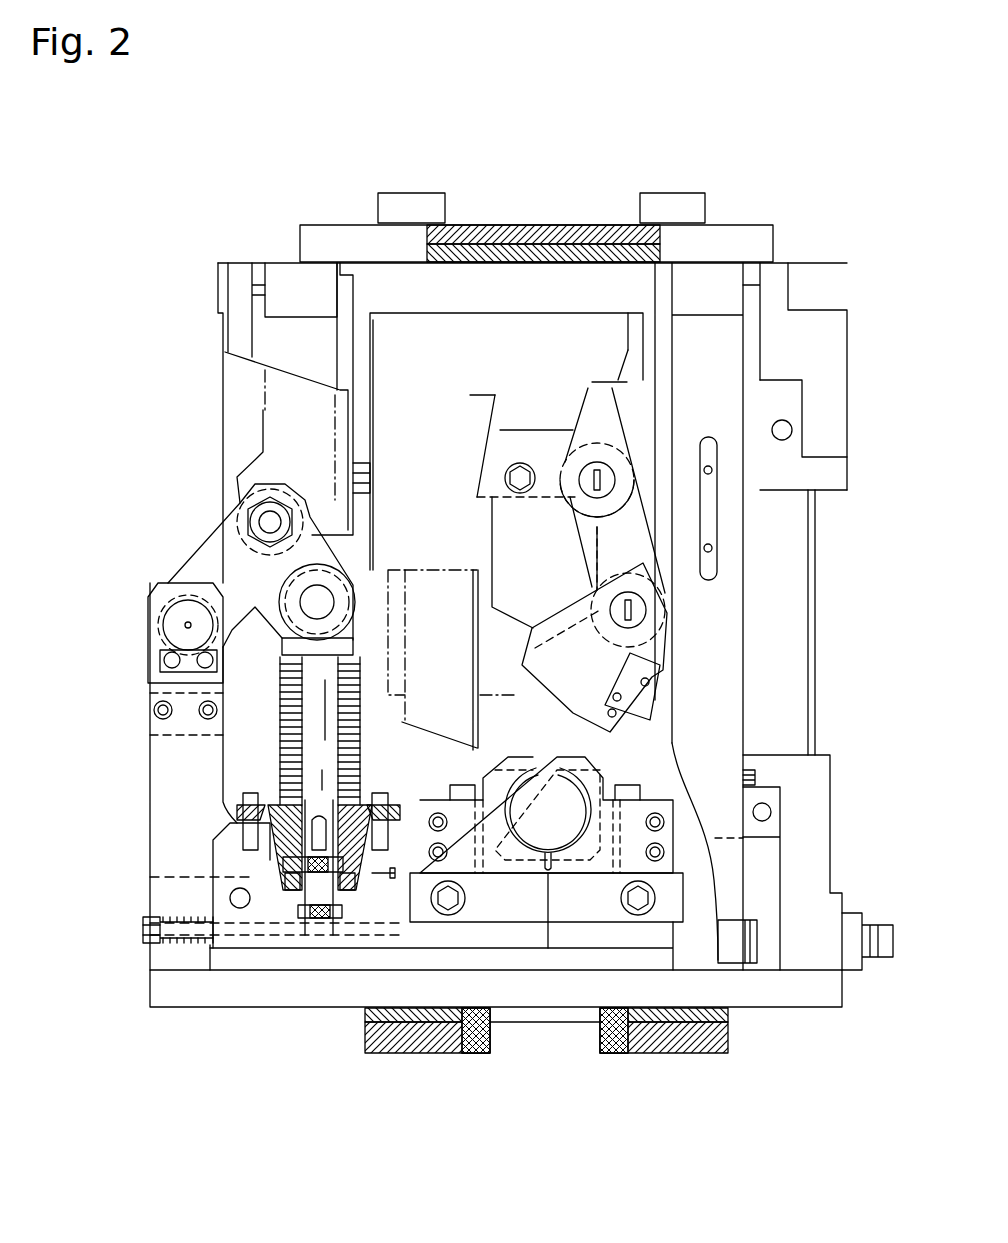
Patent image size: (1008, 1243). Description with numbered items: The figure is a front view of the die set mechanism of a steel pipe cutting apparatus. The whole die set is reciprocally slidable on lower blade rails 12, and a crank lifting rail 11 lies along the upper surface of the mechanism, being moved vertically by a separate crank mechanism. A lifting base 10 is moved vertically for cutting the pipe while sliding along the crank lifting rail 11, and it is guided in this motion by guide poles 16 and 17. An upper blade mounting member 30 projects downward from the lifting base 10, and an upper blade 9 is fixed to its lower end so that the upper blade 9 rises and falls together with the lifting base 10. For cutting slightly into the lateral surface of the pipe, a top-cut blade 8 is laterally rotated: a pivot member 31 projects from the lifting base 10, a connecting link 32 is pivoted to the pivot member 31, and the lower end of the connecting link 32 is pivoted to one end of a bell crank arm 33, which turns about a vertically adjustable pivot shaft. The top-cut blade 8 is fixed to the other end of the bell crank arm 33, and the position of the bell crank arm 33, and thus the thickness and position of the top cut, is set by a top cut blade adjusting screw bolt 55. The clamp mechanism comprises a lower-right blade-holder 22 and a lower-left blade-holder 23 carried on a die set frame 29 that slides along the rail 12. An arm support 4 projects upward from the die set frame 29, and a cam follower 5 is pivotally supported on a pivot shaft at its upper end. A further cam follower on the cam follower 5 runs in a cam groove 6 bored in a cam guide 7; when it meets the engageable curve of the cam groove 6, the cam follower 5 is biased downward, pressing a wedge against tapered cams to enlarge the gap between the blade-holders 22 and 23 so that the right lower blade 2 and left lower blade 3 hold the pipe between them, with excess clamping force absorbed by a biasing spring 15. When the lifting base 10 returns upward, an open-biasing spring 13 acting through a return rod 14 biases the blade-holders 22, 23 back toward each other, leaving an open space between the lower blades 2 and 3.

The right lower blade 2 is at (580, 765).
The left lower blade 3 is at (520, 765).
The arm support 4 is at (150, 765).
The cam follower 5 is at (197, 552).
The cam groove 6 is at (270, 415).
The cam guide 7 is at (220, 410).
The top-cut blade 8 is at (652, 728).
The upper blade 9 is at (492, 547).
The lifting base 10 is at (465, 305).
The crank lifting rail 11 is at (570, 222).
The lower blade rail 12 is at (365, 1030).
The open-biasing spring 13 is at (190, 920).
The return rod 14 is at (170, 940).
The biasing spring 15 is at (285, 715).
The guide pole 16 is at (290, 320).
The guide pole 17 is at (710, 388).
The lower-right blade-holder 22 is at (238, 840).
The lower-left blade-holder 23 is at (456, 818).
The die set frame 29 is at (255, 1000).
The upper blade mounting member 30 is at (492, 415).
The pivot member 31 is at (573, 414).
The connecting link 32 is at (585, 553).
The bell crank arm 33 is at (652, 642).
The top cut blade adjusting screw bolt 55 is at (876, 968).